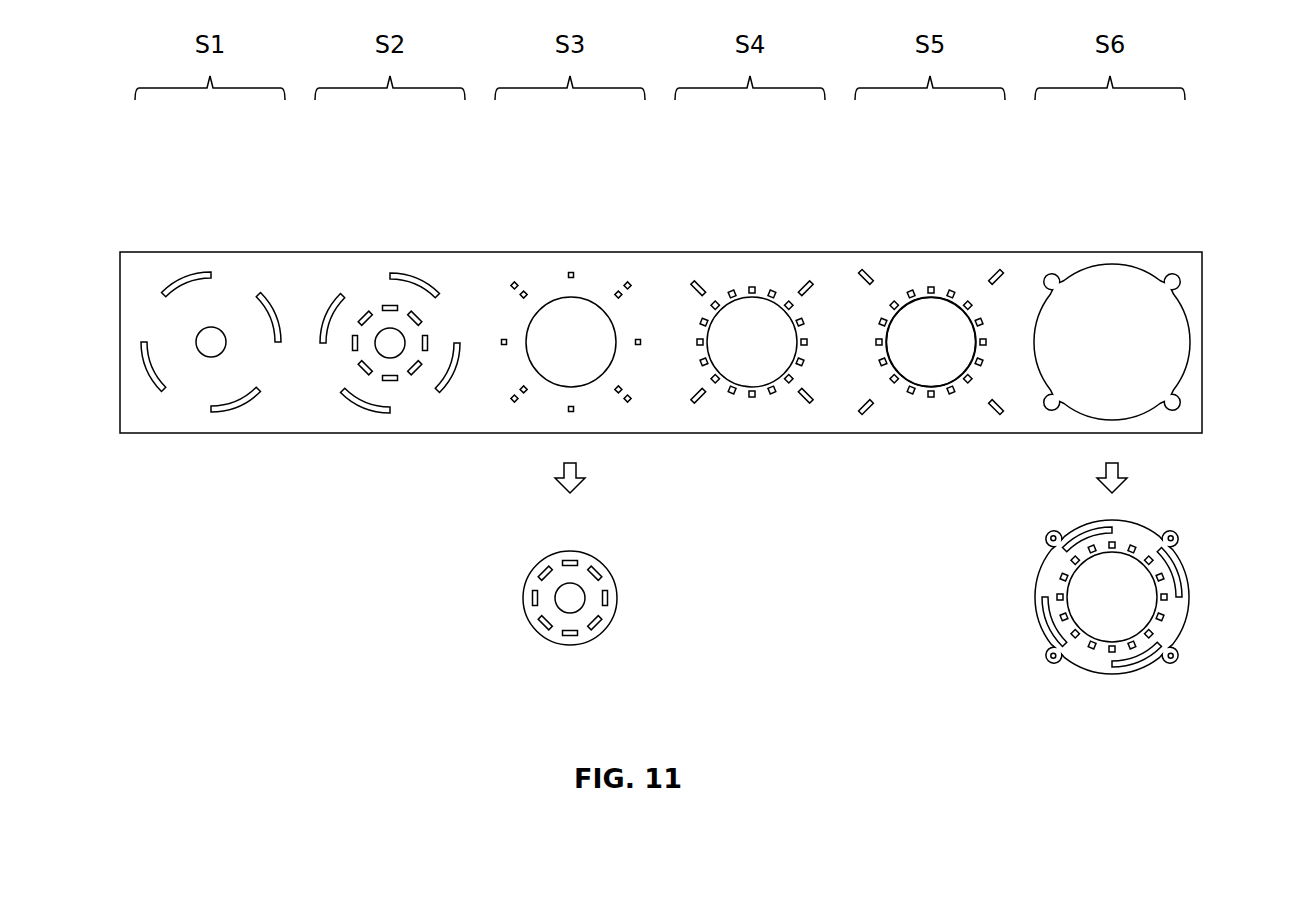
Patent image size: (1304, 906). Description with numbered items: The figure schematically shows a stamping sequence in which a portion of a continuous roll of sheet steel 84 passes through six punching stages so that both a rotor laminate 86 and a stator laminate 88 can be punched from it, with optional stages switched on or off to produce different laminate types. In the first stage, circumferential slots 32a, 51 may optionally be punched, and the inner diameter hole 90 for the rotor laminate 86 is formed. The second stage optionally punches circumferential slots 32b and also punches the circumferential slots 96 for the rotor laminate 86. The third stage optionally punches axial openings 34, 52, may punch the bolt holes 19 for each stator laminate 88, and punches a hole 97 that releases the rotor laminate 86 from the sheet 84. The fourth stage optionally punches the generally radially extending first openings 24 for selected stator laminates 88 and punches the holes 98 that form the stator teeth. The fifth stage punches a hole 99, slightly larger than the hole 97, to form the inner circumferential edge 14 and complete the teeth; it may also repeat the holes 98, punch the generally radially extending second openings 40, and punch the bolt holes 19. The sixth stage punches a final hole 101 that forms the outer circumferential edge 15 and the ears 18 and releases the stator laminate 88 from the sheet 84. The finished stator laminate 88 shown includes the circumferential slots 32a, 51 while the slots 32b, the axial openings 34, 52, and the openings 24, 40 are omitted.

The sheet steel 84 is at (1178, 262).
The circumferential slots 32a is at (178, 282).
The circumferential slots 32b is at (418, 278).
The arc-shaped slots 51 is at (639, 465).
The inner diameter hole 90 is at (215, 352).
The circumferential slots 96 is at (365, 311).
The hole 97 is at (586, 383).
The axial openings 34 is at (571, 293).
The small openings 52 is at (571, 270).
The bolt holes 19 is at (630, 281).
The holes 98 is at (752, 286).
The generally radially extending first openings 24 is at (798, 280).
The generally radially extending second openings 40 is at (994, 278).
The hole 99 is at (946, 383).
The final hole 101 is at (1112, 264).
The rotor laminate 86 is at (628, 575).
The stator laminate 88 is at (1115, 634).
The outer circumferential edge 15 is at (1038, 570).
The ears 18 is at (1176, 657).
The inner circumferential edge 14 is at (1113, 622).